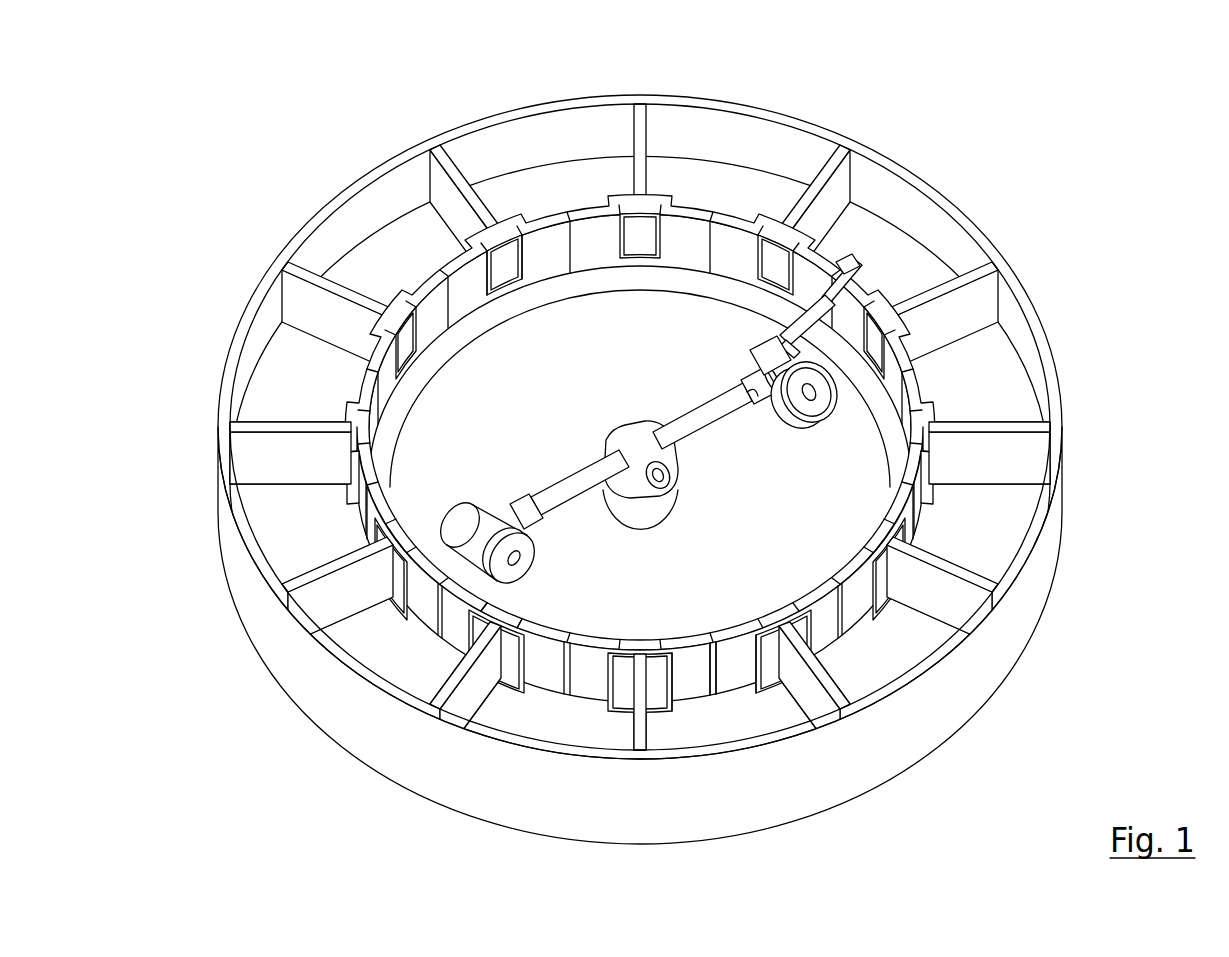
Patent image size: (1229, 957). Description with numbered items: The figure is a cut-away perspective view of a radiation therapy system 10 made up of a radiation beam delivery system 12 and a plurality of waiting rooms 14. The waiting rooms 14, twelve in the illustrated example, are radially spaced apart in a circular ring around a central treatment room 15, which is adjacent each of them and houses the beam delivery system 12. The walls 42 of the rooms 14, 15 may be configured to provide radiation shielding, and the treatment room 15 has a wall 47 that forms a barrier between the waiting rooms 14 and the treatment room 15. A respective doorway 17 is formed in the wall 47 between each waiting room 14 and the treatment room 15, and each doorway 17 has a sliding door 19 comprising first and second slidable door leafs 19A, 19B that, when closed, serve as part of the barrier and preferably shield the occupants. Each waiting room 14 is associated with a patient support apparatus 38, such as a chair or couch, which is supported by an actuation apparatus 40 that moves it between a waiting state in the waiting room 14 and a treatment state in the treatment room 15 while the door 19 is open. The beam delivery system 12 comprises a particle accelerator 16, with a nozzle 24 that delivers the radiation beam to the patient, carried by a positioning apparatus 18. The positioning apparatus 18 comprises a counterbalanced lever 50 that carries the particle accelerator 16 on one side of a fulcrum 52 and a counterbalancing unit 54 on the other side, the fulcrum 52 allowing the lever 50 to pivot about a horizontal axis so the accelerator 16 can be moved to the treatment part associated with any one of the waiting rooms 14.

The radiation therapy system 10 is at (896, 110).
The radiation beam delivery system 12 is at (648, 425).
The waiting rooms 14 is at (365, 250).
The treatment room 15 is at (599, 360).
The particle accelerator 16 is at (773, 364).
The doorway 17 is at (355, 362).
The positioning apparatus 18 is at (646, 463).
The door 19 is at (548, 210).
The first slidable door leaf 19A is at (682, 642).
The second slidable door leaf 19B is at (735, 633).
The nozzle 24 is at (815, 407).
The patient support apparatus 38 is at (777, 333).
The actuation apparatus 40 is at (843, 268).
The walls 42 is at (440, 182).
The wall 47 is at (498, 262).
The counterbalanced lever 50 is at (690, 430).
The fulcrum 52 is at (665, 478).
The counterbalancing unit 54 is at (480, 526).